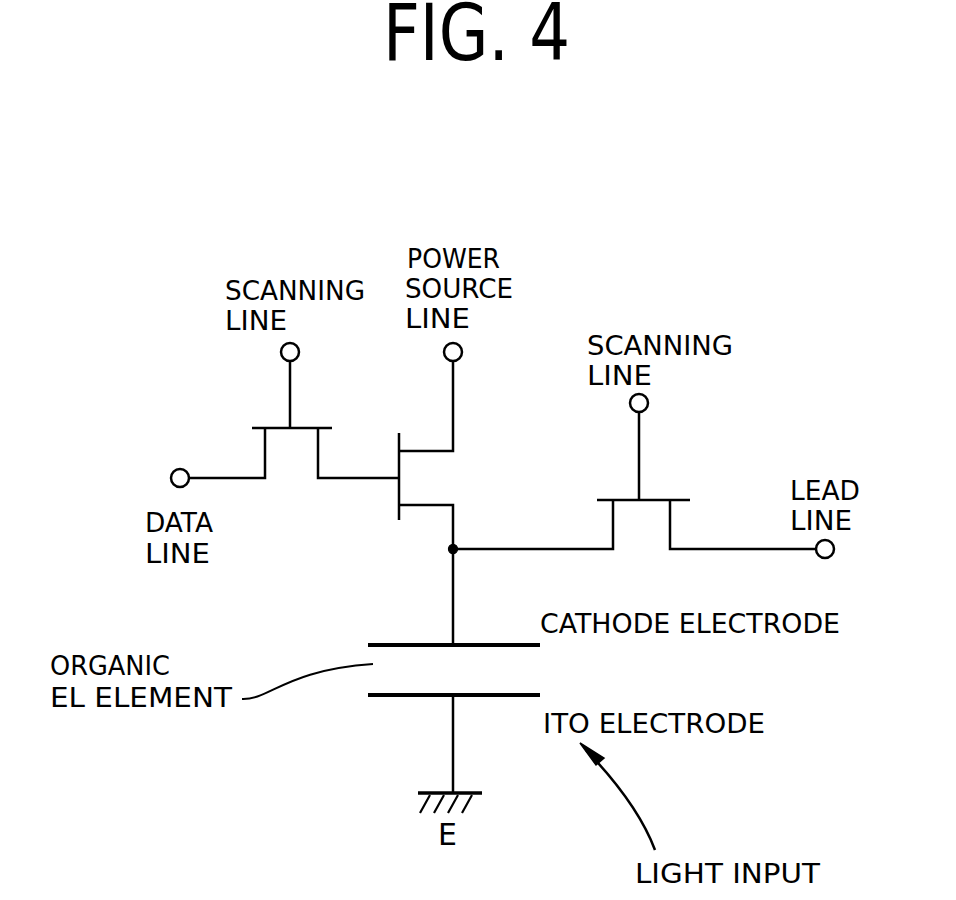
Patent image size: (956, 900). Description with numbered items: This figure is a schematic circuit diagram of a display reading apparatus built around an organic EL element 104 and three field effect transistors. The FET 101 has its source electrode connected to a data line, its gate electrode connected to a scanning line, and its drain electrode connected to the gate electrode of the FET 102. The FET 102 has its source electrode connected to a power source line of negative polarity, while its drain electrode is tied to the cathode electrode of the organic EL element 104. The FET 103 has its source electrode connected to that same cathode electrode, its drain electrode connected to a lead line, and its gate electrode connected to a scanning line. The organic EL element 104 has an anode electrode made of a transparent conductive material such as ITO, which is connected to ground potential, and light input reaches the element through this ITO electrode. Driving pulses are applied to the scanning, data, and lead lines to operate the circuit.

The FET 101 is at (279, 427).
The FET 102 is at (397, 463).
The FET 103 is at (625, 497).
The organic EL element 104 is at (537, 660).